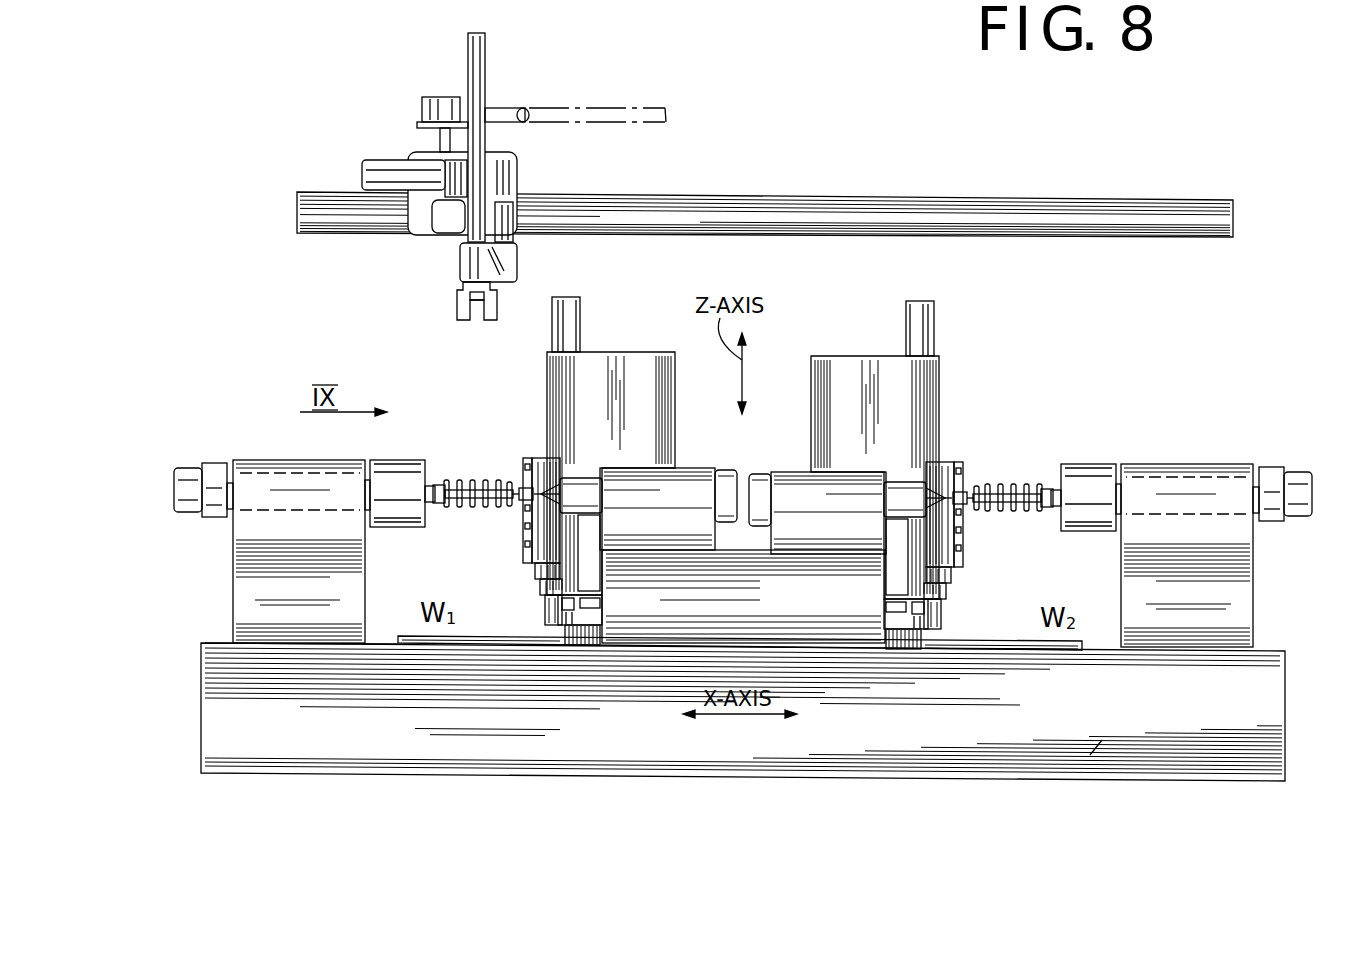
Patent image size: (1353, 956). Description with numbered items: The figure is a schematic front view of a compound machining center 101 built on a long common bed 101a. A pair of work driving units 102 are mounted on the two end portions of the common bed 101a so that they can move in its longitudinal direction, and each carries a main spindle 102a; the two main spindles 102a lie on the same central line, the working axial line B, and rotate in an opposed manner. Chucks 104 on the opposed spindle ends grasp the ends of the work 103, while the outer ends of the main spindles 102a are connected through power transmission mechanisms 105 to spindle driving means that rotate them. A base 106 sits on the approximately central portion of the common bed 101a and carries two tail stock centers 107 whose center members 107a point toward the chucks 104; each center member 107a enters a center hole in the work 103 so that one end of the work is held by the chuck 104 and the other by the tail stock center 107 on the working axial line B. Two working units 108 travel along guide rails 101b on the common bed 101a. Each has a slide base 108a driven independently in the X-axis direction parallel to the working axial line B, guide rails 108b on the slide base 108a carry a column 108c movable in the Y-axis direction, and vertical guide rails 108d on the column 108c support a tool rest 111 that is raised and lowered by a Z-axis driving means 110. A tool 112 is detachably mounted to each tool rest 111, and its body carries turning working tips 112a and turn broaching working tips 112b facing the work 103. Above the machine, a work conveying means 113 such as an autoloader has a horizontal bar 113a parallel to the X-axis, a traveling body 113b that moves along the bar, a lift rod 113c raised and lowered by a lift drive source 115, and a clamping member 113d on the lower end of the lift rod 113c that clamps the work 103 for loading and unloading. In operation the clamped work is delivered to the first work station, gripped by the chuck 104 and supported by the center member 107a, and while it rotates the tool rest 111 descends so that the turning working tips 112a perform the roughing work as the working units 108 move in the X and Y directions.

The compound machining center 101 is at (1262, 652).
The common bed 101a is at (1102, 742).
The guide rails 101b is at (458, 644).
The work driving unit 102 is at (240, 575).
The main spindle 102a is at (280, 480).
The work 103 is at (460, 505).
The chuck 104 is at (413, 470).
The power transmission mechanism 105 is at (187, 478).
The base 106 is at (720, 628).
The tail stock center 107 is at (689, 488).
The center member 107a is at (546, 472).
The working unit 108 is at (598, 348).
The slide base 108a is at (577, 647).
The guide rails 108b is at (588, 612).
The column 108c is at (650, 372).
The guide rails 108d is at (550, 385).
The Z-axis driving means 110 is at (576, 302).
The tool rest 111 is at (546, 564).
The tool 112 is at (524, 556).
The turning working tips 112a is at (524, 508).
The turn broaching working tips 112b is at (522, 470).
The work conveying means 113 is at (442, 258).
The horizontal bar 113a is at (745, 235).
The traveling body 113b is at (518, 170).
The lift rod 113c is at (485, 78).
The clamping member 113d is at (457, 304).
The lift drive source 115 is at (366, 170).
The working axial line B is at (1095, 500).